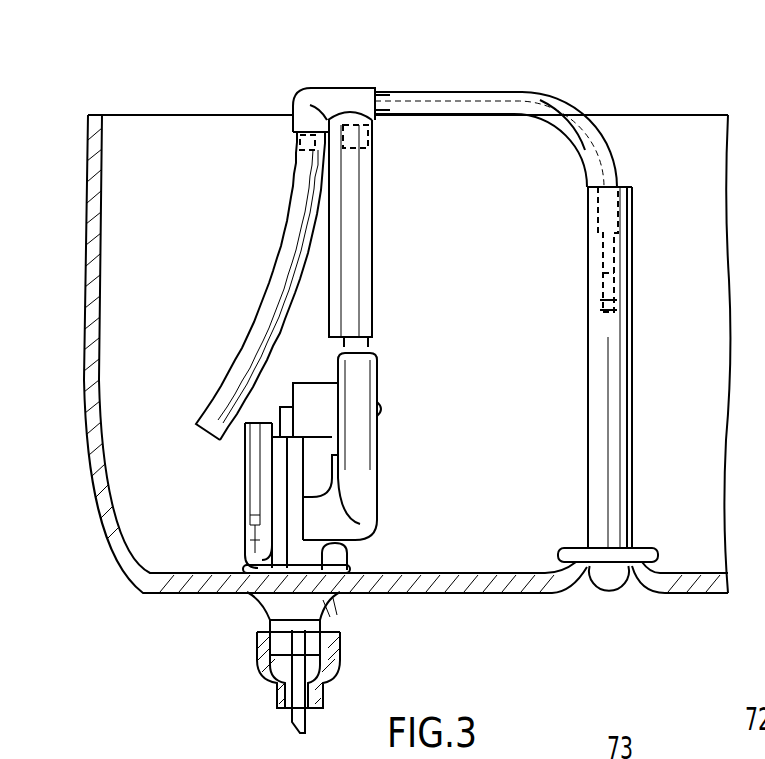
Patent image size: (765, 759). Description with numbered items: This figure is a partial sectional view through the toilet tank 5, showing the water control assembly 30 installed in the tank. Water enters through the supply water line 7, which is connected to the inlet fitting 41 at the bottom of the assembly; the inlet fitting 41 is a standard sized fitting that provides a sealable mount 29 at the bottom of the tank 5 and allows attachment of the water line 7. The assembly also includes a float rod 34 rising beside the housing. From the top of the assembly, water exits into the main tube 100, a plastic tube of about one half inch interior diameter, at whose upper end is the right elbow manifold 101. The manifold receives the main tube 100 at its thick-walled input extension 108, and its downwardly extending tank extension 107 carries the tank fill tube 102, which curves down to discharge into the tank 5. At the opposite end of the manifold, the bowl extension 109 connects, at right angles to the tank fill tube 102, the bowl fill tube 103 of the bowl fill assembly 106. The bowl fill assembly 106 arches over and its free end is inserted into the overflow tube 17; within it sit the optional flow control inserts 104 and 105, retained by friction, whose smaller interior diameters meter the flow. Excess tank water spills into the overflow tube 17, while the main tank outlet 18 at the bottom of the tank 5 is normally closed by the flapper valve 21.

The tank 5 is at (108, 365).
The supply water line 7 is at (292, 714).
The overflow tube 17 is at (610, 457).
The main tank outlet 18 is at (645, 586).
The flapper valve 21 is at (588, 588).
The sealable mount 29 is at (243, 573).
The water control assembly 30 is at (399, 391).
The float rod 34 is at (248, 545).
The inlet fitting 41 is at (266, 620).
The main tube 100 is at (360, 316).
The right elbow manifold 101 is at (282, 62).
The tank fill tube 102 is at (280, 292).
The bowl fill tube 103 is at (570, 133).
The flow control insert 104 is at (620, 260).
The flow control insert 105 is at (612, 302).
The bowl fill assembly 106 is at (556, 90).
The tank extension 107 is at (300, 141).
The input extension 108 is at (370, 138).
The bowl extension 109 is at (396, 92).